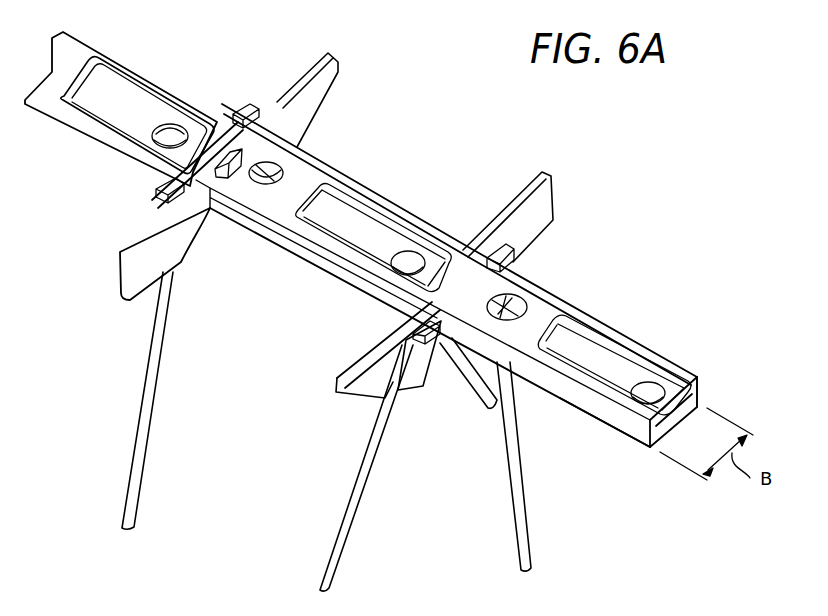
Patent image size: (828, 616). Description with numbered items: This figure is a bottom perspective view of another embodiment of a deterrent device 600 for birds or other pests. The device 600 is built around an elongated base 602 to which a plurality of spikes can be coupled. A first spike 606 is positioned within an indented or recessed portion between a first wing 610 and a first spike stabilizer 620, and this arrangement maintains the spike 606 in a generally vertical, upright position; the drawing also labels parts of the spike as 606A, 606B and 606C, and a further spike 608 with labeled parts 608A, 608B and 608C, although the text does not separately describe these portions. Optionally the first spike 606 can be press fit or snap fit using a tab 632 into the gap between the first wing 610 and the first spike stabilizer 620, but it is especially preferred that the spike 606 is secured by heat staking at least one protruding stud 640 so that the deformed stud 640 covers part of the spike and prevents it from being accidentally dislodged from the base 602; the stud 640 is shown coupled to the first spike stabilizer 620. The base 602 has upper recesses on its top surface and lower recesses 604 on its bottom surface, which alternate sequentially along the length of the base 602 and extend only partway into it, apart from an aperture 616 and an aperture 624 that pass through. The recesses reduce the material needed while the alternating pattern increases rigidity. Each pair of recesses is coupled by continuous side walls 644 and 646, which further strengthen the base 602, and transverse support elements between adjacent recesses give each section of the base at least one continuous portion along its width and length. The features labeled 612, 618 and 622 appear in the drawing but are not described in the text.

The deterrent device 600 is at (622, 164).
The base 602 is at (547, 320).
The lower recess 604 is at (317, 226).
The first spike 606 is at (452, 451).
The first leg 606A is at (357, 488).
The leg connection strip 606B is at (433, 300).
The second leg 606C is at (523, 525).
The strut member 608 is at (309, 312).
The first strut 608A is at (143, 450).
The cross strut 608B is at (235, 140).
The third strut 608C is at (482, 408).
The first wing 610 is at (334, 385).
The fin 612 is at (332, 53).
The aperture 616 is at (404, 252).
The end plate 618 is at (112, 92).
The first spike stabilizer 620 is at (420, 383).
The end tab 622 is at (160, 222).
The aperture 624 is at (272, 183).
The tab 632 is at (230, 170).
The protruding stud 640 is at (259, 118).
The continuous side wall 644 is at (605, 412).
The continuous side wall 646 is at (690, 375).